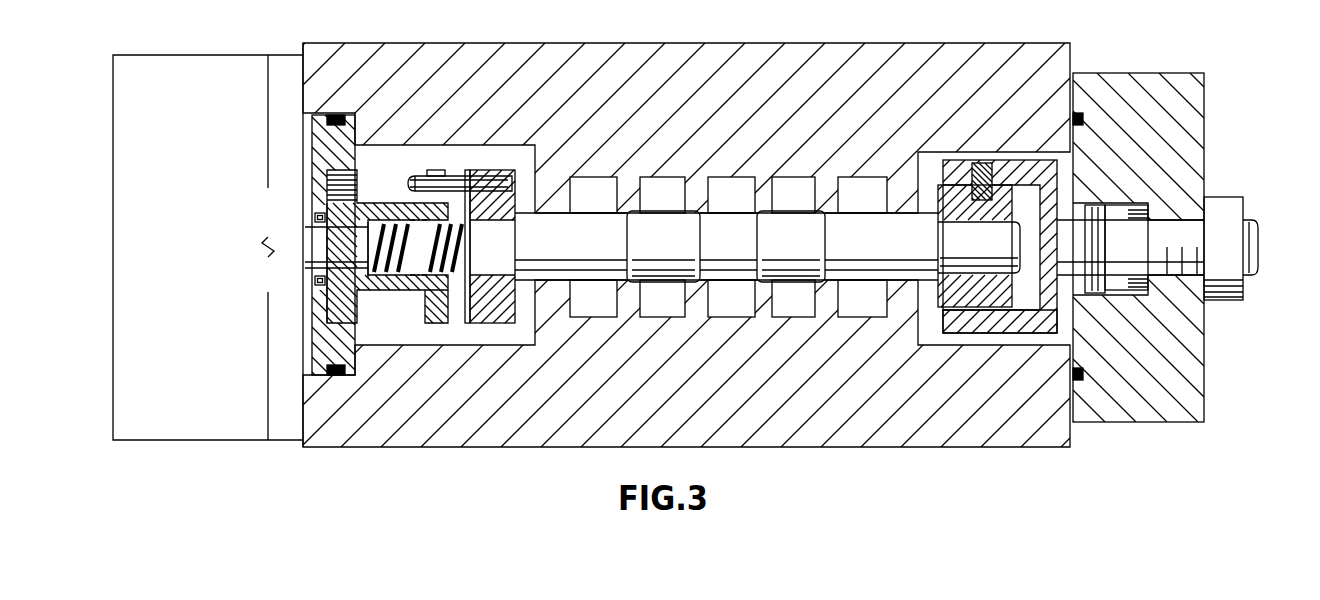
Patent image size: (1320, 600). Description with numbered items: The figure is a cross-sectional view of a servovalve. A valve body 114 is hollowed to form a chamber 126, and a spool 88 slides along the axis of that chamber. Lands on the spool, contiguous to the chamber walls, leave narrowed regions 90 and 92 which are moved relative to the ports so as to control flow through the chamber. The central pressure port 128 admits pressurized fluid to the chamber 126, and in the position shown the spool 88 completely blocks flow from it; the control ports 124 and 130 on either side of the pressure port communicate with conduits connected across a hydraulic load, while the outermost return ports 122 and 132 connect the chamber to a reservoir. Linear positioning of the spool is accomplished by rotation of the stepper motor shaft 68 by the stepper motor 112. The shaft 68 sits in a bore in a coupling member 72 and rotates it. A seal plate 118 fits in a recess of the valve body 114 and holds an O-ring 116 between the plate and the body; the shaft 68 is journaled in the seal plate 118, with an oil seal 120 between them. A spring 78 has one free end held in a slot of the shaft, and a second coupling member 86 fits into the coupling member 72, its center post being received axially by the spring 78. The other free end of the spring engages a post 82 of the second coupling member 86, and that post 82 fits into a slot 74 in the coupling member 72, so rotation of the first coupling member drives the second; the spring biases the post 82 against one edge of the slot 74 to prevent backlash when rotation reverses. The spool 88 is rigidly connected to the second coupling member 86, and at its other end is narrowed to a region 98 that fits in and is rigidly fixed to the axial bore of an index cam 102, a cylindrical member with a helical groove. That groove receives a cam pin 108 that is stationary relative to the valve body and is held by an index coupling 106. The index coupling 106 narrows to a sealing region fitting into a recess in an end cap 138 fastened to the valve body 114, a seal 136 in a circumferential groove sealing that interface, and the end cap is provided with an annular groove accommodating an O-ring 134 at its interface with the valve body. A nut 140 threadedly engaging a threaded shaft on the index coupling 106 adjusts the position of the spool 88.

The stepper motor shaft 68 is at (318, 243).
The coupling member 72 is at (372, 292).
The slot 74 is at (436, 171).
The spring 78 is at (403, 291).
The post 82 is at (410, 185).
The second coupling member 86 is at (492, 323).
The spool 88 is at (549, 249).
The narrowed region 90 is at (644, 249).
The narrowed region 92 is at (774, 249).
The narrowed region 98 is at (965, 248).
The index cam 102 is at (936, 186).
The index coupling 106 is at (984, 334).
The cam pin 108 is at (984, 162).
The stepper motor 112 is at (254, 440).
The valve body 114 is at (355, 448).
The O-ring 116 is at (339, 114).
The seal plate 118 is at (353, 357).
The oil seal 120 is at (318, 215).
The return port 122 is at (579, 206).
The control port 124 is at (649, 206).
The chamber 126 is at (689, 212).
The pressure port 128 is at (717, 206).
The control port 130 is at (779, 206).
The return port 132 is at (848, 206).
The O-ring seal 134 is at (1080, 113).
The seal 136 is at (1096, 206).
The end cap 138 is at (1199, 73).
The nut 140 is at (1231, 198).